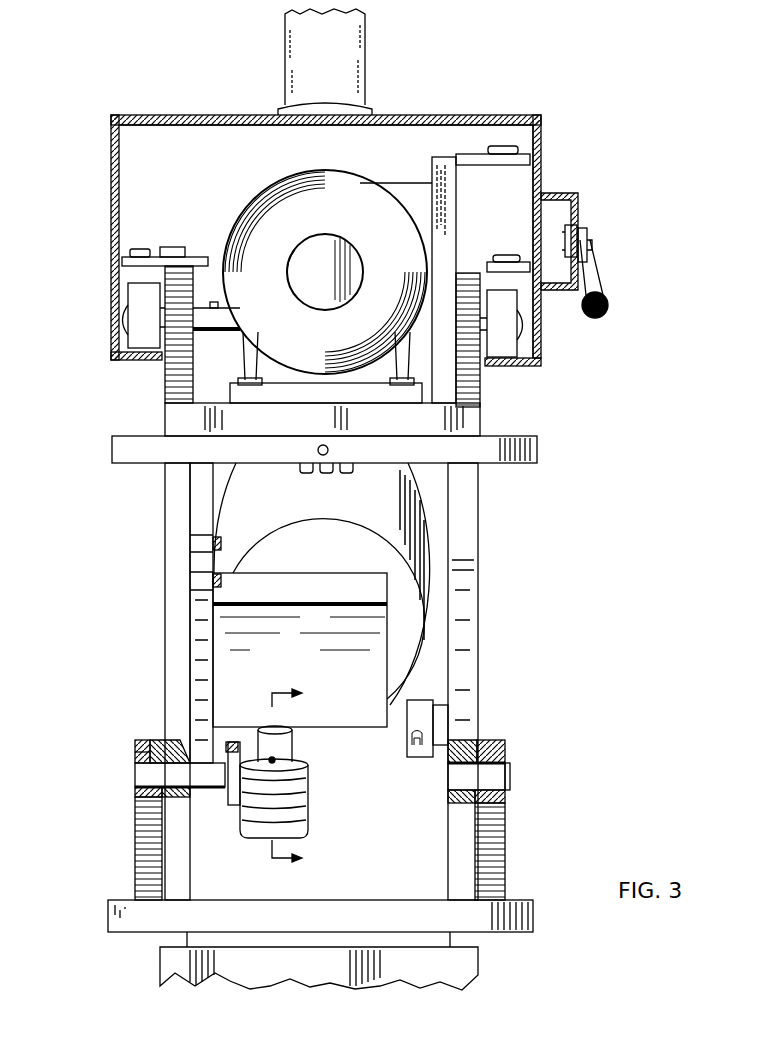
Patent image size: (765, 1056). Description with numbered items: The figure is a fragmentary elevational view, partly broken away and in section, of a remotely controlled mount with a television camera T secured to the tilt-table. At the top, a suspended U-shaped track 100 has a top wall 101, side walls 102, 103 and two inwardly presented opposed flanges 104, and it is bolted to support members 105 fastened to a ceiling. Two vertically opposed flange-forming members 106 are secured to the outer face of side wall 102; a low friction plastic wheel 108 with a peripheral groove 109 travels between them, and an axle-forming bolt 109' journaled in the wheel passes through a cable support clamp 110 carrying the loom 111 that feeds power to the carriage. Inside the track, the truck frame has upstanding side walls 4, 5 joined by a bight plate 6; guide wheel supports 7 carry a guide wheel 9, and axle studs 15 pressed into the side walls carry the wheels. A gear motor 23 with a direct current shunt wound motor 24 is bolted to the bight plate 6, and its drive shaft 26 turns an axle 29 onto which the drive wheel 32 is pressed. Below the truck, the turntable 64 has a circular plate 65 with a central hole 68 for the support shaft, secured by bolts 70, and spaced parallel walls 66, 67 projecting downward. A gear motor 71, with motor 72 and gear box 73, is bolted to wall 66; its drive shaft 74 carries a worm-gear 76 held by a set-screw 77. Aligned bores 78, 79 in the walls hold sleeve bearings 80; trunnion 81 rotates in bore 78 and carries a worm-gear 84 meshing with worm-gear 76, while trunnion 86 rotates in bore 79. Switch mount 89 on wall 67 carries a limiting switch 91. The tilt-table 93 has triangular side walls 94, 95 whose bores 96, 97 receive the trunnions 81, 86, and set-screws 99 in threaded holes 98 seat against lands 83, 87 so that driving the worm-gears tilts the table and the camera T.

The side wall 4 is at (482, 402).
The side wall 5 is at (165, 384).
The bight plate 6 is at (165, 419).
The guide wheel support 7 is at (470, 160).
The guide wheel 9 is at (298, 776).
The axle stud 15 is at (537, 338).
The gear motor 23 is at (268, 180).
The direct current shunt wound motor 24 is at (358, 182).
The drive shaft 26 is at (243, 336).
The axle 29 is at (120, 323).
The drive wheel 32 is at (128, 298).
The turntable 64 is at (158, 636).
The circular plate 65 is at (537, 450).
The wall 66 is at (190, 571).
The wall 67 is at (478, 575).
The hole 68 is at (329, 451).
The bolt 70 is at (325, 473).
The gear motor 71 is at (440, 512).
The direct current shunt wound motor 72 is at (428, 540).
The gear box 73 is at (345, 727).
The drive shaft 74 is at (282, 744).
The worm-gear 76 is at (308, 810).
The set-screw 77 is at (276, 760).
The bore 78 is at (190, 798).
The bore 79 is at (452, 796).
The sleeve bearing 80 is at (448, 762).
The trunnion 81 is at (135, 776).
The land 83 is at (137, 762).
The worm-gear 84 is at (232, 747).
The trunnion 86 is at (508, 788).
The land 87 is at (510, 768).
The switch mount 89 is at (440, 717).
The limiting switch 91 is at (420, 702).
The tilt-table 93 is at (112, 905).
The triangular side wall 94 is at (135, 819).
The triangular side wall 95 is at (505, 874).
The bore 96 is at (135, 790).
The bore 97 is at (505, 799).
The threaded hole 98 is at (137, 746).
The set-screw 99 is at (160, 745).
The track 100 is at (215, 117).
The top wall 101 is at (466, 121).
The side wall 102 is at (545, 133).
The side wall 103 is at (110, 175).
The flange 104 is at (518, 366).
The support member 105 is at (365, 44).
The flange-forming member 106 is at (565, 195).
The wheel 108 is at (578, 226).
The peripheral groove 109 is at (608, 241).
The axle-forming bolt 109' is at (619, 252).
The cable support clamp 110 is at (600, 280).
The loom 111 is at (610, 306).
The television camera T is at (154, 963).